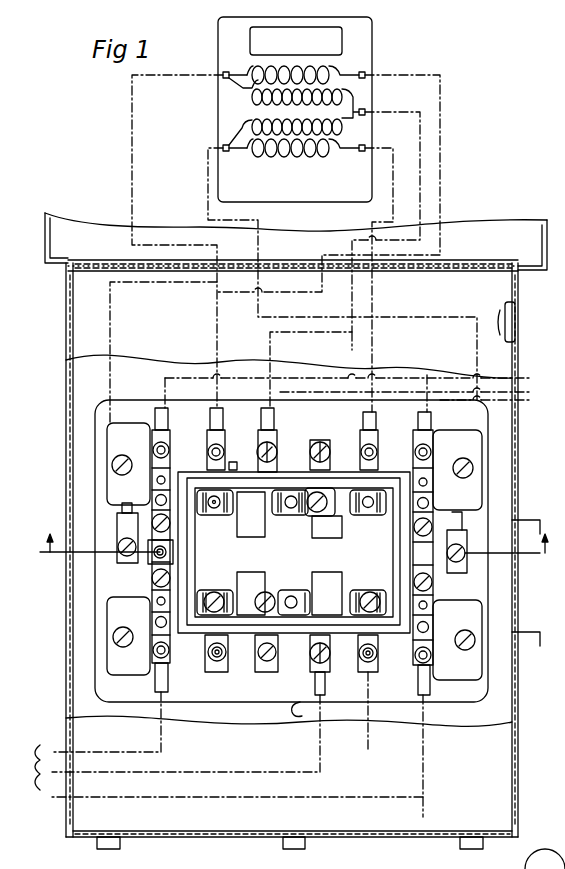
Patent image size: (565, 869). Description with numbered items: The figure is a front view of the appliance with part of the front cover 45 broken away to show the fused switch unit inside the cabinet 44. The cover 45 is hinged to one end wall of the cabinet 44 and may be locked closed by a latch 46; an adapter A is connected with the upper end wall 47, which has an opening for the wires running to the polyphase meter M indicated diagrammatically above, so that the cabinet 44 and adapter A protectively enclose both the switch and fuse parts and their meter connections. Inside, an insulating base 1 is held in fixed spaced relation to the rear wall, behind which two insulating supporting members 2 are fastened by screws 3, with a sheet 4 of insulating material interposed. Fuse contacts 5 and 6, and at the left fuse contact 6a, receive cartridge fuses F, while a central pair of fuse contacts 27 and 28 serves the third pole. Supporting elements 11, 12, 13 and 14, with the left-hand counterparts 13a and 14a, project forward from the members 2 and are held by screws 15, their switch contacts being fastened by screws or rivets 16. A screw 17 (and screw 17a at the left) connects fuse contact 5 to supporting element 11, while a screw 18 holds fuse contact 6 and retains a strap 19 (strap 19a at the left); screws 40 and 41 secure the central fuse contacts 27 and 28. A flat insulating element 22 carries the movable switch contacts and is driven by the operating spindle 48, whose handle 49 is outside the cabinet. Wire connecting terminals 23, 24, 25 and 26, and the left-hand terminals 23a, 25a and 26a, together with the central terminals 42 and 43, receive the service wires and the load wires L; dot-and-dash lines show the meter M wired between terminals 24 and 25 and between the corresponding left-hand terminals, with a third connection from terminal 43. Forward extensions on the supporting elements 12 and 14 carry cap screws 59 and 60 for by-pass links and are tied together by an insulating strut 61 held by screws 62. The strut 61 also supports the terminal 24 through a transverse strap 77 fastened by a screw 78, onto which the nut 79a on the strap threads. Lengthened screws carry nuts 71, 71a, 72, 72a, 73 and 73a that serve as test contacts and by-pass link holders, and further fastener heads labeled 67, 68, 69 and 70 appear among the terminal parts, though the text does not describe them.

The polyphase meter M is at (373, 66).
The adapter A is at (528, 228).
The front cover 45 is at (77, 338).
The upper end wall 47 is at (492, 276).
The latch 46 is at (513, 322).
The load wires L is at (548, 388).
The cabinet 44 is at (512, 490).
The operating handle 49 is at (553, 842).
The screws 3 is at (380, 752).
The sheet of insulating material 4 is at (411, 375).
The insulating supporting members 2 is at (294, 556).
The fuse contact 5 is at (206, 673).
The wire connecting terminal 26a is at (185, 420).
The wire connecting terminal 25a is at (238, 420).
The wire terminal 43 is at (290, 412).
The screw 69 is at (277, 446).
The nut 72a is at (224, 456).
The supporting element 13a is at (237, 470).
The terminal 70 is at (327, 448).
The wire connecting terminal 25 is at (364, 424).
The nut 72 is at (378, 452).
The insulating base 1 is at (380, 468).
The supporting element 13 is at (352, 463).
The wire connecting terminal 26 is at (446, 416).
The screws 15 is at (440, 456).
The supporting element 14 is at (449, 450).
The supporting element 14a is at (156, 482).
The screws 62 is at (428, 482).
The cap screw 60 is at (428, 504).
The wire connecting terminal 24 is at (108, 526).
The screw 78 is at (150, 556).
The nut 79a is at (157, 562).
The transverse strap 77 is at (452, 570).
The operating spindle 48 is at (452, 588).
The cap screw 59 is at (435, 605).
The strut 61 is at (449, 627).
The supporting element 12 is at (446, 655).
The screws or rivets 16 is at (430, 662).
The conducting member 19a is at (213, 508).
The fuse contact 6a is at (233, 510).
The fuse contact 28 is at (296, 512).
The screw 41 is at (316, 514).
The screw 18 is at (472, 536).
The conducting member 19 is at (370, 527).
The fuse contact 6 is at (370, 510).
The fuse F is at (299, 559).
The screw 40 is at (265, 590).
The fuse contact 27 is at (294, 592).
The screw 17a is at (218, 612).
The nut 71a is at (208, 665).
The terminal 67 is at (262, 670).
The screw 17 is at (368, 612).
The terminal 68 is at (329, 665).
The nut 71 is at (360, 658).
The wire terminal 42 is at (325, 688).
The supporting element 11 is at (372, 672).
The nut 73 is at (418, 674).
The nut 73a is at (152, 651).
The wire connecting terminal 23a is at (156, 688).
The flat insulating element 22 is at (384, 704).
The wire connecting terminal 23 is at (426, 692).